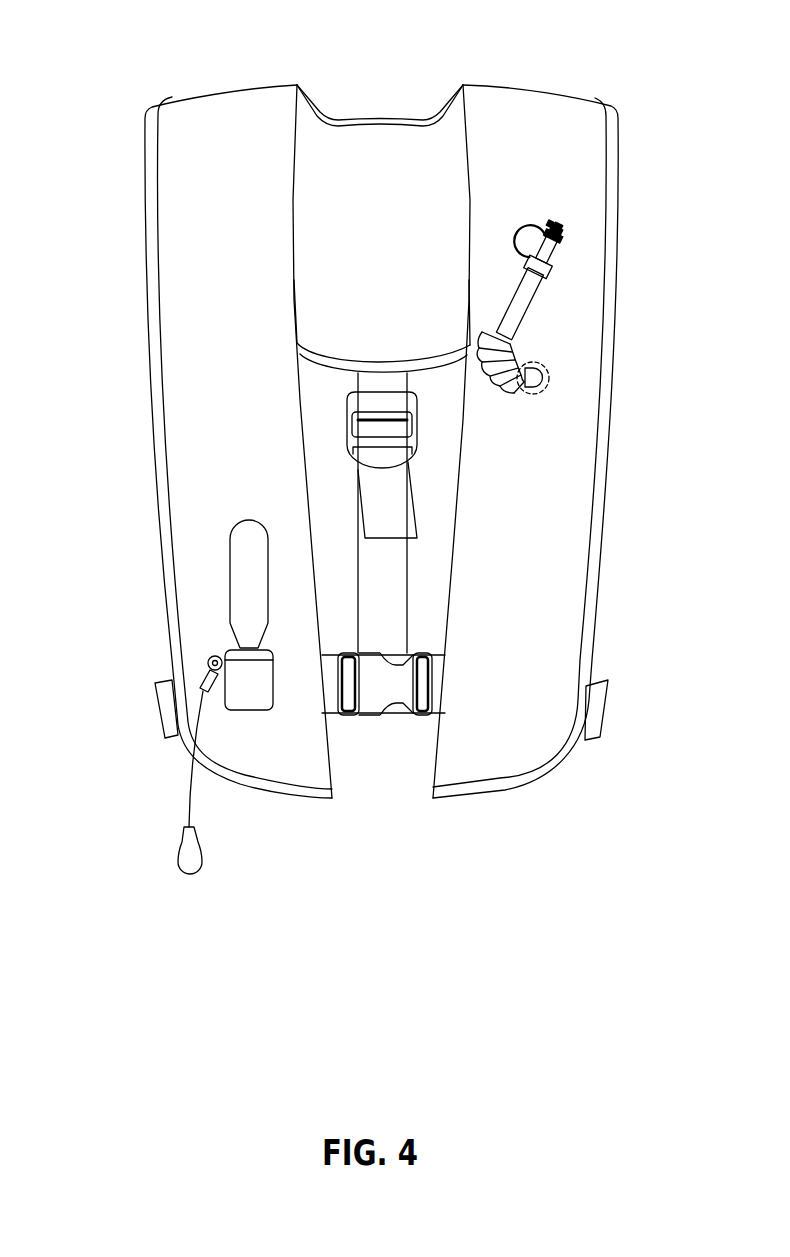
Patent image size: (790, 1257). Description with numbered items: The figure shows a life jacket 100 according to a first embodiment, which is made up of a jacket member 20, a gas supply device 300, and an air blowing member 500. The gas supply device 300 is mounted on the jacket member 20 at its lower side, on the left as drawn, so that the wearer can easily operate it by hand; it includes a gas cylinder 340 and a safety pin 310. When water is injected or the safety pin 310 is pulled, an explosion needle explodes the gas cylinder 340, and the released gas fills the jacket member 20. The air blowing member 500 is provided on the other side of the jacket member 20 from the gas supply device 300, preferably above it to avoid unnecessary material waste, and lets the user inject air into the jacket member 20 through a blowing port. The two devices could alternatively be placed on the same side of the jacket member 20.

The life jacket 100 is at (496, 33).
The jacket member 20 is at (580, 478).
The air blowing member 500 is at (544, 283).
The gas supply device 300 is at (150, 697).
The gas cylinder 340 is at (242, 565).
The safety pin 310 is at (238, 673).